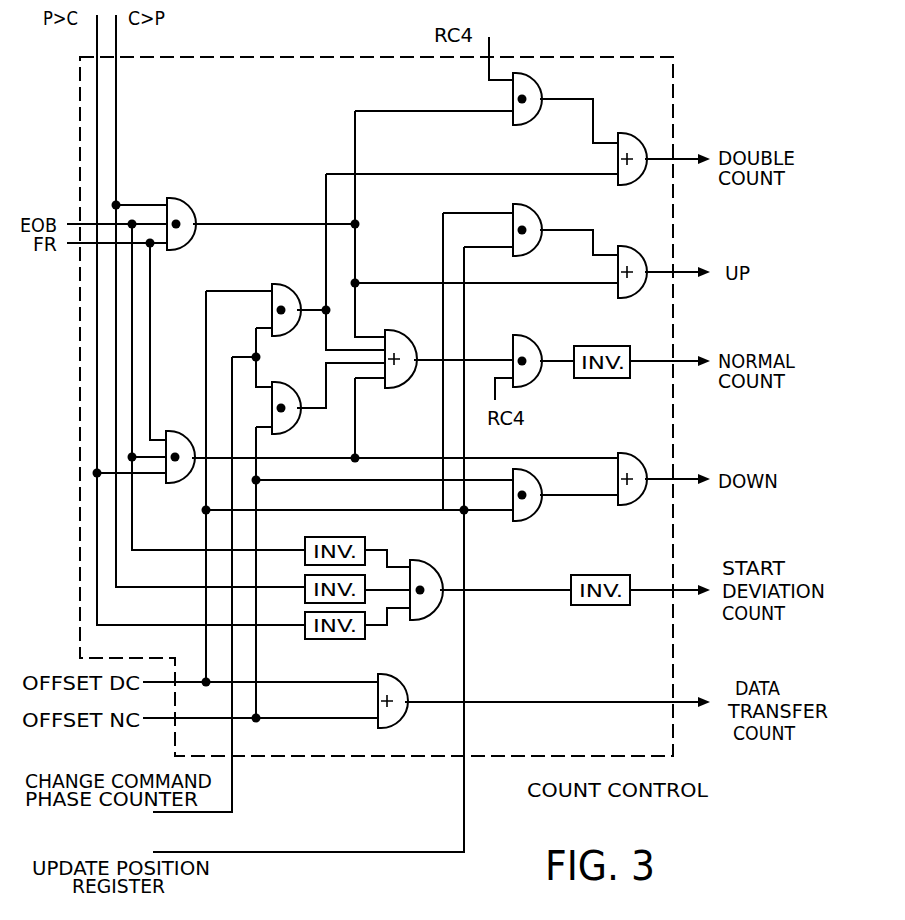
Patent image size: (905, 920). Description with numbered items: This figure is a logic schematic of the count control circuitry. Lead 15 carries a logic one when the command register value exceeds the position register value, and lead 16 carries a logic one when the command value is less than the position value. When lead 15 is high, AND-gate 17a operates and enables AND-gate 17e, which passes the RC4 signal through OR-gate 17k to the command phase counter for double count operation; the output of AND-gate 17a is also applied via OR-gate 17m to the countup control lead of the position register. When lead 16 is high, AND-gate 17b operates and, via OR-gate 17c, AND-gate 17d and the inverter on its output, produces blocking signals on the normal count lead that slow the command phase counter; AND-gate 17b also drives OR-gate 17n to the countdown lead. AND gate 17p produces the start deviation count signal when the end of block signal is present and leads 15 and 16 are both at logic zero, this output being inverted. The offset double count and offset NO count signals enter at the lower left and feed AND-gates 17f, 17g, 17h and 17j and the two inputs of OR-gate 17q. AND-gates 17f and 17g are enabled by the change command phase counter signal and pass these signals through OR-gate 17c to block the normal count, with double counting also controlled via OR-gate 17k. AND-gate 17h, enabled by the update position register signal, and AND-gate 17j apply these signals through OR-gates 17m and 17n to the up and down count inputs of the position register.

The lead 15 is at (116, 48).
The lead 16 is at (97, 43).
The AND-gate 17a is at (186, 205).
The AND-gate 17b is at (196, 420).
The OR-gate 17c is at (412, 372).
The AND-gate 17d is at (546, 331).
The AND-gate 17e is at (532, 75).
The AND-gate 17f is at (300, 273).
The AND-gate 17g is at (308, 381).
The AND-gate 17h is at (532, 208).
The AND-gate 17j is at (533, 506).
The OR-gate 17k is at (650, 128).
The OR-gate 17m is at (650, 240).
The OR-gate 17n is at (648, 446).
The AND gate 17p is at (445, 552).
The OR-gate 17q is at (403, 690).